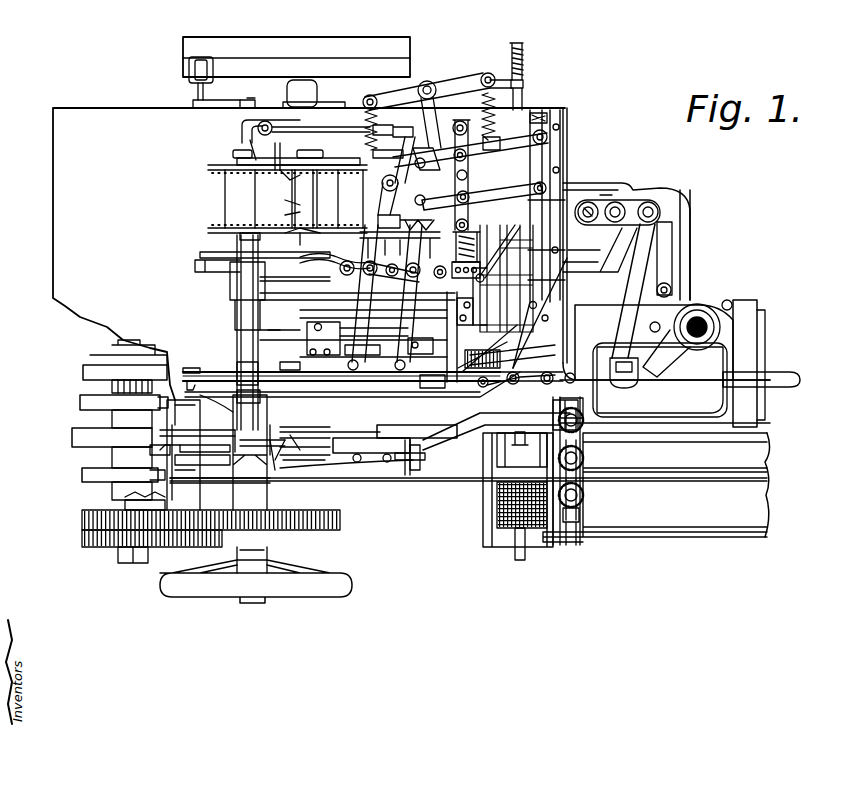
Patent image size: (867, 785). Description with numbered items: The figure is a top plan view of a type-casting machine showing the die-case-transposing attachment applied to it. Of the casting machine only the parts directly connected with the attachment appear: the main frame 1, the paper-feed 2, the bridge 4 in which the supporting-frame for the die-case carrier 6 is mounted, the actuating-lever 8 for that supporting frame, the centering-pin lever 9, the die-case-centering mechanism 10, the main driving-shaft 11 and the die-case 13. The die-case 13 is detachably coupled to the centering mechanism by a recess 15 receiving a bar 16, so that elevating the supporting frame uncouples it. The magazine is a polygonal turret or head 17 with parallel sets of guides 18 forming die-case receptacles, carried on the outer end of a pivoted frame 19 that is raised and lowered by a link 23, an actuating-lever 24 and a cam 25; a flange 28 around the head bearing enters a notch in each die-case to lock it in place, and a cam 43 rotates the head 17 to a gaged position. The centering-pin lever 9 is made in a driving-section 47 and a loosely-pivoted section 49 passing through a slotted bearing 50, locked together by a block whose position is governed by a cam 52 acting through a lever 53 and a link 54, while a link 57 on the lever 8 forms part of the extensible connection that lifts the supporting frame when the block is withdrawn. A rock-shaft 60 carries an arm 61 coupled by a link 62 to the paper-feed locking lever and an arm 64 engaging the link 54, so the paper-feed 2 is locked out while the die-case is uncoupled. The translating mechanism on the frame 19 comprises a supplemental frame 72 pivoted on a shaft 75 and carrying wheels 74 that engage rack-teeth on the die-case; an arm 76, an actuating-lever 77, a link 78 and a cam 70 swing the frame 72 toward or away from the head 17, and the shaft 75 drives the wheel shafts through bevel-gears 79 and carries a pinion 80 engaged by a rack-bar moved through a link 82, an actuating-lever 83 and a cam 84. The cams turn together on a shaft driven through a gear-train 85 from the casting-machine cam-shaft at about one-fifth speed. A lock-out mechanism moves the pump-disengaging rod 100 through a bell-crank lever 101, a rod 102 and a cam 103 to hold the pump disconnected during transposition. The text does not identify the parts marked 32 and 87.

The main frame 1 is at (309, 304).
The paper-feed 2 is at (232, 158).
The bridge 4 is at (512, 350).
The die-case carrier 6 is at (518, 320).
The actuating-lever 8 is at (531, 388).
The centering-pin lever 9 is at (498, 390).
The die-case-centering mechanism 10 is at (392, 208).
The main driving-shaft 11 is at (312, 100).
The die-case 13 is at (515, 530).
The recess 15 is at (555, 403).
The bar 16 is at (548, 276).
The turret or head 17 is at (491, 490).
The guides 18 is at (500, 530).
The frame 19 is at (408, 462).
The link 23 is at (325, 438).
The actuating-lever 24 is at (296, 445).
The cam 25 is at (80, 405).
The circumferential projection or flange 28 is at (497, 453).
The block 32 is at (387, 462).
The cam 43 is at (88, 476).
The driving-section 47 is at (291, 370).
The loosely-pivoted section 49 is at (373, 389).
The slotted bearing 50 is at (437, 378).
The cam 52 is at (92, 366).
The lever 53 is at (186, 388).
The link 54 is at (215, 372).
The link 57 is at (492, 373).
The rock-shaft 60 is at (253, 300).
The arm 61 is at (225, 243).
The link 62 is at (237, 228).
The arm 64 is at (243, 377).
The cam 70 is at (115, 493).
The supplemental frame 72 is at (225, 192).
The wheel 74 is at (583, 502).
The shaft 75 is at (583, 508).
The arm 76 is at (584, 488).
The actuating-lever 77 is at (245, 483).
The link 78 is at (421, 465).
The bevel-gears 79 is at (607, 461).
The pinion 80 is at (583, 404).
The link 82 is at (245, 443).
The actuating-lever 83 is at (237, 398).
The cam 84 is at (157, 445).
The gear-train 85 is at (82, 522).
The bar 87 is at (483, 440).
The pump-disengaging rod 100 is at (413, 462).
The bell-crank lever 101 is at (416, 462).
The rod 102 is at (312, 443).
The cam 103 is at (95, 430).